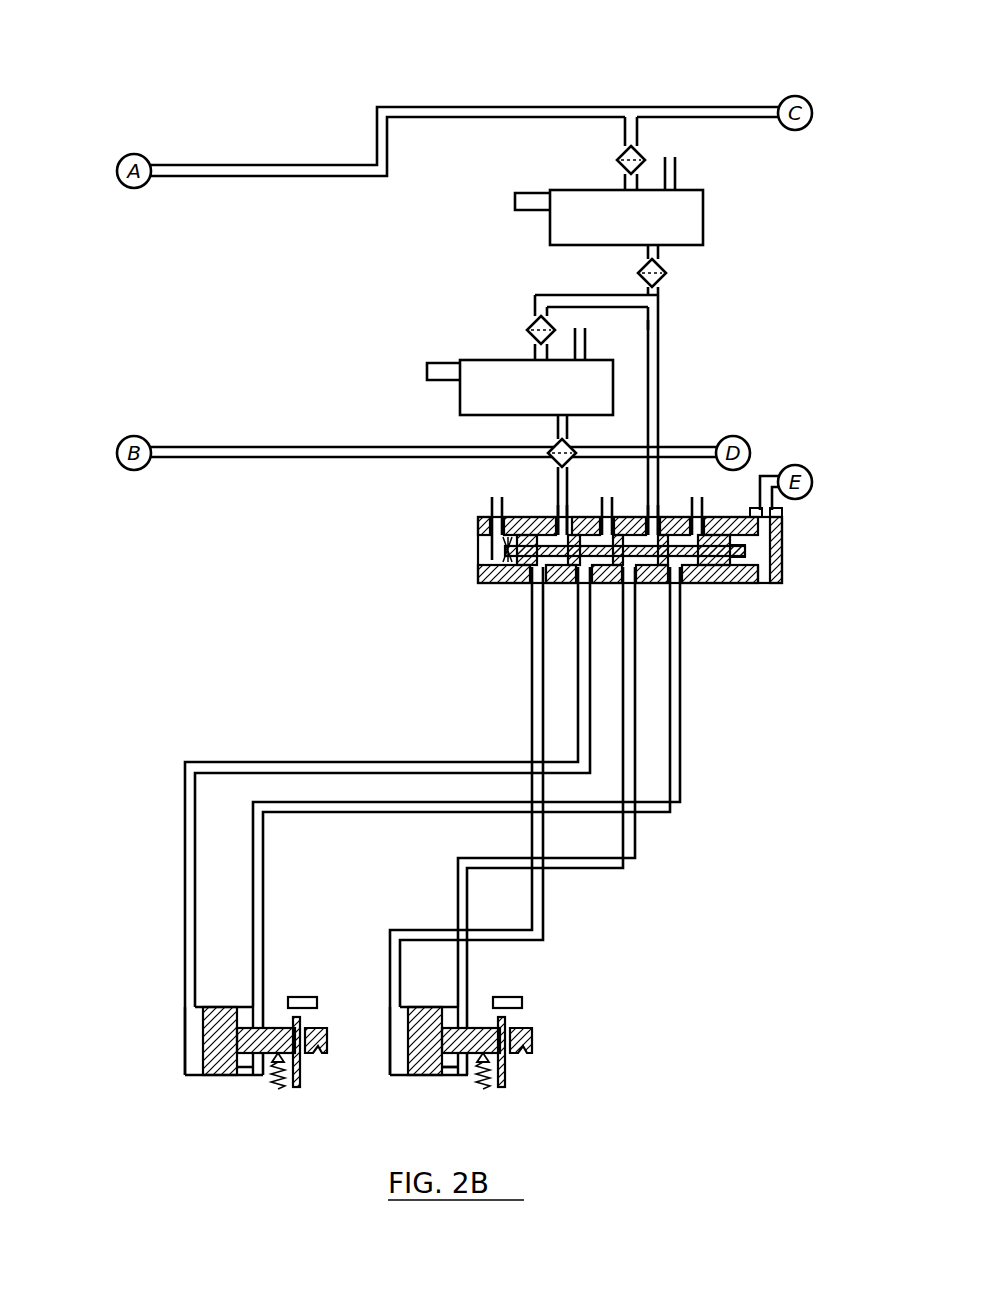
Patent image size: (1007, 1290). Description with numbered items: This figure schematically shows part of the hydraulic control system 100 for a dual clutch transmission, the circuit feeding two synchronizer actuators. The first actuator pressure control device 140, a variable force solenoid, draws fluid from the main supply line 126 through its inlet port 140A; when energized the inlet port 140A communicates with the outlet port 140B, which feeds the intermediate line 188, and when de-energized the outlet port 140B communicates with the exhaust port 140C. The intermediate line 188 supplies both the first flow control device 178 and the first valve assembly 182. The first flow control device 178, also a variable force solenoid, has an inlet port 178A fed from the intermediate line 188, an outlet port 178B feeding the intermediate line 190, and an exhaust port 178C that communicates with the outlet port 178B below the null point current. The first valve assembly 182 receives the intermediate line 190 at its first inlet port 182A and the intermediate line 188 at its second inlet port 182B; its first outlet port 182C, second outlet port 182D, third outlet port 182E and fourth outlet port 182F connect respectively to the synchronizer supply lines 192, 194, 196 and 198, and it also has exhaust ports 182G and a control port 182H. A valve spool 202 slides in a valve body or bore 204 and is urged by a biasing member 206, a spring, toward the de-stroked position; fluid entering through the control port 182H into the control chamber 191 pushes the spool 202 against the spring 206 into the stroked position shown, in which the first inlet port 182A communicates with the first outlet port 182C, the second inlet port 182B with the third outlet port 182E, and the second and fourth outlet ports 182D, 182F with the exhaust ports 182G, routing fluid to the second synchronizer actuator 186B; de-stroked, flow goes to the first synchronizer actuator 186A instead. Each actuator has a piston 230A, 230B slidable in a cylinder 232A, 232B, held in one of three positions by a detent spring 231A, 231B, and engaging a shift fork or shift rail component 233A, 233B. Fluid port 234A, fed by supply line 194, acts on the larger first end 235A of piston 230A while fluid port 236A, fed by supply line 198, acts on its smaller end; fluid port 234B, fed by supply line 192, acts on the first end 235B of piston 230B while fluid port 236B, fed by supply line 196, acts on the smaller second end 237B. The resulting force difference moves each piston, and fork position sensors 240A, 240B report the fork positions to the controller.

The fluid system 100 is at (790, 58).
The main supply line 126 is at (440, 105).
The first actuator pressure control device 140 is at (690, 230).
The inlet port 140A is at (627, 186).
The outlet port 140B is at (656, 250).
The exhaust port 140C is at (676, 180).
The first flow control device 178 is at (590, 386).
The inlet port 178A is at (538, 356).
The outlet port 178B is at (566, 424).
The exhaust port 178C is at (586, 352).
The intermediate line 188 is at (660, 366).
The intermediate line 190 is at (556, 442).
The first valve assembly 182 is at (468, 556).
The first inlet port 182A is at (556, 522).
The second inlet port 182B is at (655, 512).
The first outlet port 182C is at (520, 588).
The second outlet port 182D is at (578, 592).
The third outlet port 182E is at (632, 592).
The fourth outlet port 182F is at (686, 588).
The exhaust ports 182G is at (494, 512).
The control port 182H is at (762, 508).
The control chamber 191 is at (742, 566).
The valve spool 202 is at (782, 570).
The valve body or bore 204 is at (760, 541).
The biasing member 206 is at (480, 528).
The synchronizer supply line 192 is at (532, 732).
The synchronizer supply line 194 is at (578, 698).
The synchronizer supply line 196 is at (635, 700).
The synchronizer supply line 198 is at (680, 730).
The first synchronizer actuator 186A is at (213, 1041).
The second synchronizer actuator 186B is at (485, 1056).
The piston 230A is at (216, 1035).
The piston 230B is at (425, 1072).
The detent spring 231A is at (250, 1070).
The detent spring 231B is at (484, 1090).
The piston housing or cylinder 232A is at (294, 1072).
The piston housing or cylinder 232B is at (400, 1072).
The shift rail component 233A is at (300, 1090).
The shift rail component 233B is at (506, 1068).
The fluid port 234A is at (196, 1012).
The fluid port 234B is at (398, 1012).
The first end 235A is at (262, 1046).
The first end 235B is at (400, 1022).
The fluid port 236A is at (250, 1000).
The fluid port 236B is at (456, 1002).
The second end 237B is at (455, 1078).
The fork position sensor 240A is at (300, 996).
The fork position sensor 240B is at (505, 996).